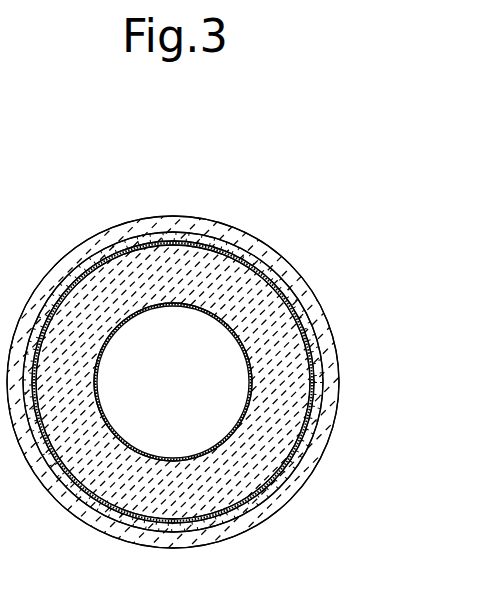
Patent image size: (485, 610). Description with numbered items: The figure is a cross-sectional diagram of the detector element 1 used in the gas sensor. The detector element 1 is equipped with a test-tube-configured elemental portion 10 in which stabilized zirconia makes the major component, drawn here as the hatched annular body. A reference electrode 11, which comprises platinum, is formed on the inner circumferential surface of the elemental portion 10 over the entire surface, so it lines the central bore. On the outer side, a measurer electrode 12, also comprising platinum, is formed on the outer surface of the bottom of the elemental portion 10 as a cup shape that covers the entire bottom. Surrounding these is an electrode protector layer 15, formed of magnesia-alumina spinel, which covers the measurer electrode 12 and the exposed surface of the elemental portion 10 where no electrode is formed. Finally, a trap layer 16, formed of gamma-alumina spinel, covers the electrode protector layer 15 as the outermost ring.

The detector element 1 is at (218, 210).
The elemental portion 10 is at (283, 311).
The reference electrode 11 is at (135, 312).
The measurer electrode 12 is at (313, 348).
The electrode protector layer 15 is at (233, 508).
The trap layer 16 is at (310, 465).